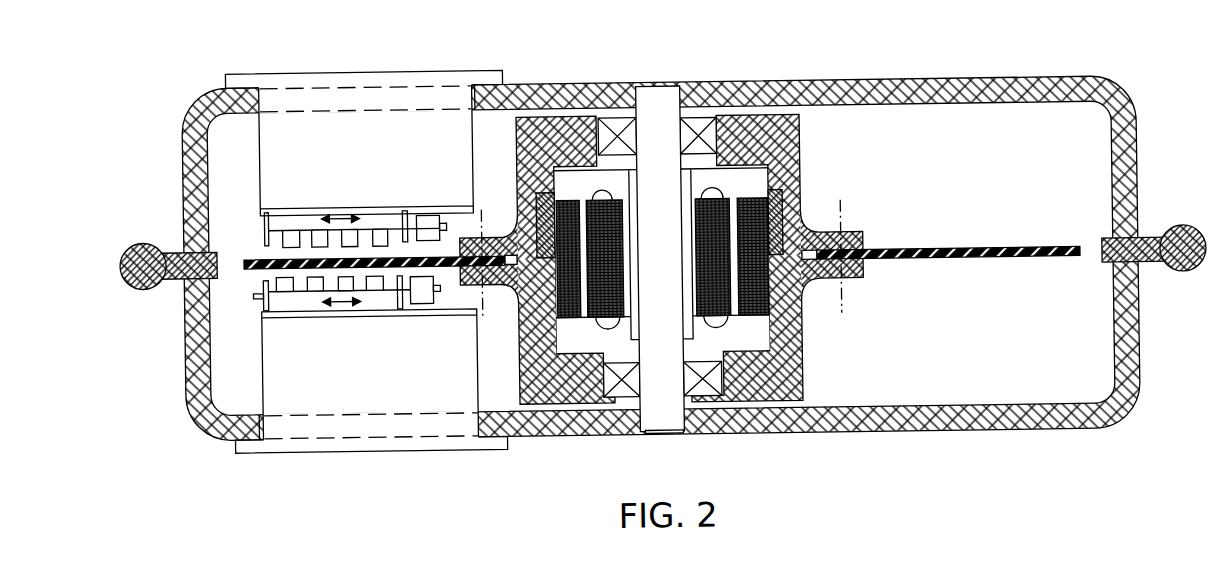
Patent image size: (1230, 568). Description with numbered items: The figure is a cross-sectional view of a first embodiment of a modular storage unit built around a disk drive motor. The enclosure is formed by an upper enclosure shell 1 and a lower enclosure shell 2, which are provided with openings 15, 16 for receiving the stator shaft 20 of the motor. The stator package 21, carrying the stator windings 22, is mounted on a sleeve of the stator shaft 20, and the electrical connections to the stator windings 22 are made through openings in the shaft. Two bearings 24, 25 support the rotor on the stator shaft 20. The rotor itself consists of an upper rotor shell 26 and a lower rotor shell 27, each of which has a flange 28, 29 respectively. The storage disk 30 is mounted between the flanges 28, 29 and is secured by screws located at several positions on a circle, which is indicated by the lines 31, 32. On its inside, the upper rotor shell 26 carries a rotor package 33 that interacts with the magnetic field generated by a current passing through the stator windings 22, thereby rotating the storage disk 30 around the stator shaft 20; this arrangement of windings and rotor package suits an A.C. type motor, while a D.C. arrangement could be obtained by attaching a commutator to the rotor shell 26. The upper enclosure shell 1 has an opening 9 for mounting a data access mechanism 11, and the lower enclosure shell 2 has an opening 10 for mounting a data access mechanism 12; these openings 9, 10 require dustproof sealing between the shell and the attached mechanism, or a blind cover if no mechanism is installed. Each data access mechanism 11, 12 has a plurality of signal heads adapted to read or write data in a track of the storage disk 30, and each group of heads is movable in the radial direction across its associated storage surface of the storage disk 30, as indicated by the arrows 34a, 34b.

The upper enclosure shell 1 is at (216, 96).
The lower enclosure shell 2 is at (212, 426).
The opening 9 is at (412, 98).
The opening 10 is at (337, 427).
The data access mechanism 11 is at (362, 153).
The data access mechanism 12 is at (370, 384).
The opening 15 is at (652, 92).
The opening 16 is at (667, 439).
The stator shaft 20 is at (668, 198).
The stator package 21 is at (718, 326).
The stator windings 22 is at (714, 203).
The bearing 24 is at (613, 124).
The bearing 25 is at (633, 191).
The upper rotor shell 26 is at (530, 165).
The lower rotor shell 27 is at (532, 366).
The flange 28 is at (852, 250).
The flange 29 is at (855, 280).
The storage disk 30 is at (978, 258).
The line 31 is at (838, 223).
The line 32 is at (490, 222).
The rotor package 33 is at (570, 314).
The arrow 34a is at (345, 306).
The arrow 34b is at (338, 218).